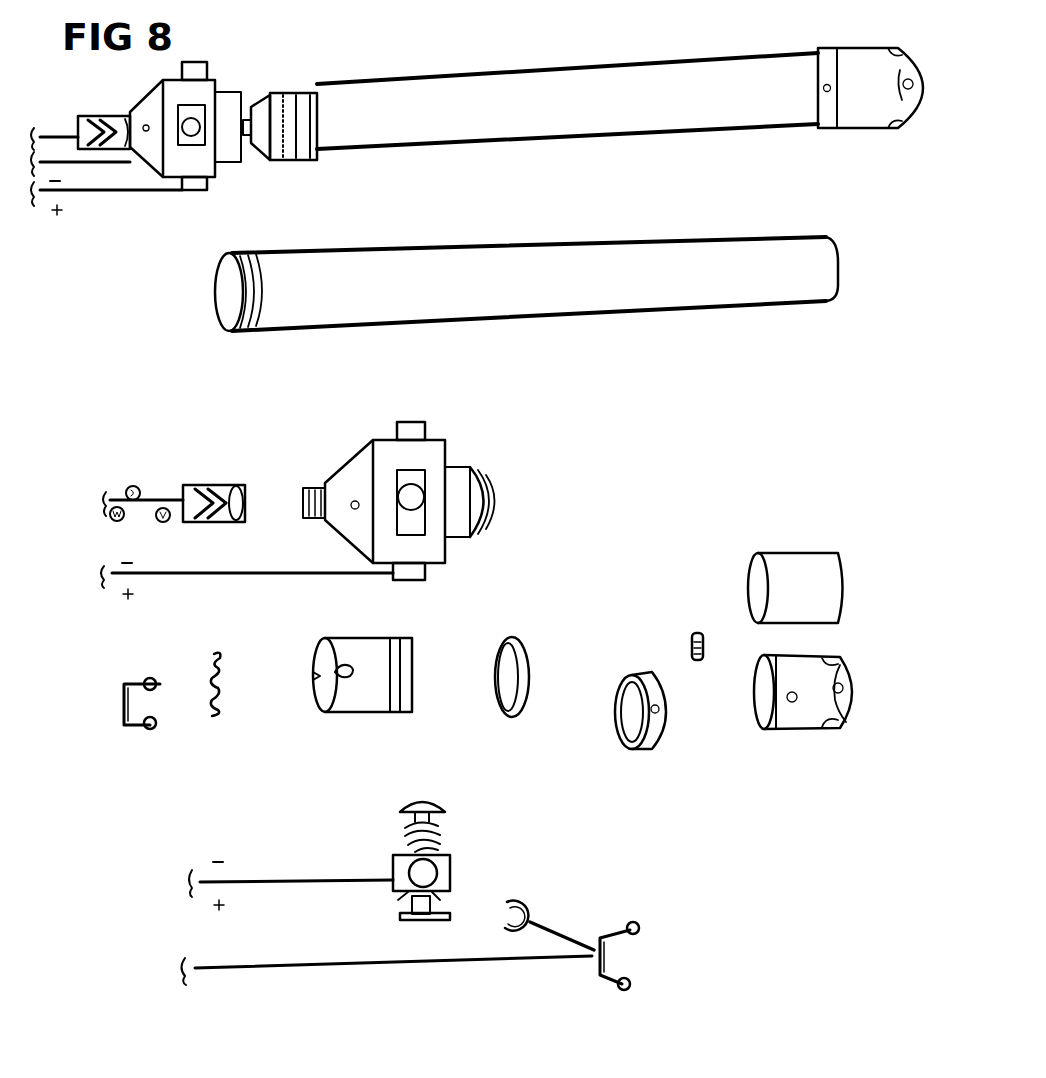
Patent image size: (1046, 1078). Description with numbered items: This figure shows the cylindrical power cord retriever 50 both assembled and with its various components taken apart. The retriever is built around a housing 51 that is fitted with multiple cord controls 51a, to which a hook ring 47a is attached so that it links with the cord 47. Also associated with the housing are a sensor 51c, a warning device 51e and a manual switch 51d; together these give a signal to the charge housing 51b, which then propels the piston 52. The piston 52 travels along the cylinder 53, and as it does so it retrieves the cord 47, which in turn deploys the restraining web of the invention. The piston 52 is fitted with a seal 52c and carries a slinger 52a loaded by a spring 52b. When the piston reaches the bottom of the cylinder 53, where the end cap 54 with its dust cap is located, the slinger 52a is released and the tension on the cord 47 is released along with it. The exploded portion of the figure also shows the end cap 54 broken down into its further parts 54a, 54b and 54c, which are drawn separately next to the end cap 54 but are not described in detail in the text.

The cord 47 is at (390, 956).
The hook ring 47a is at (540, 897).
The cylindrical power cord retriever 50 is at (407, 72).
The housing 51 is at (465, 470).
The cord controls 51a is at (215, 70).
The charge housing 51b is at (97, 120).
The sensor 51c is at (136, 486).
The manual switch 51d is at (168, 523).
The warning device 51e is at (121, 524).
The piston 52 is at (297, 150).
The slinger 52a is at (133, 675).
The spring 52b is at (226, 645).
The seal 52c is at (511, 627).
The cylinder 53 is at (503, 243).
The end cap 54 is at (828, 133).
The ring 54a is at (642, 670).
The pin 54b is at (697, 627).
The sleeve 54c is at (771, 550).